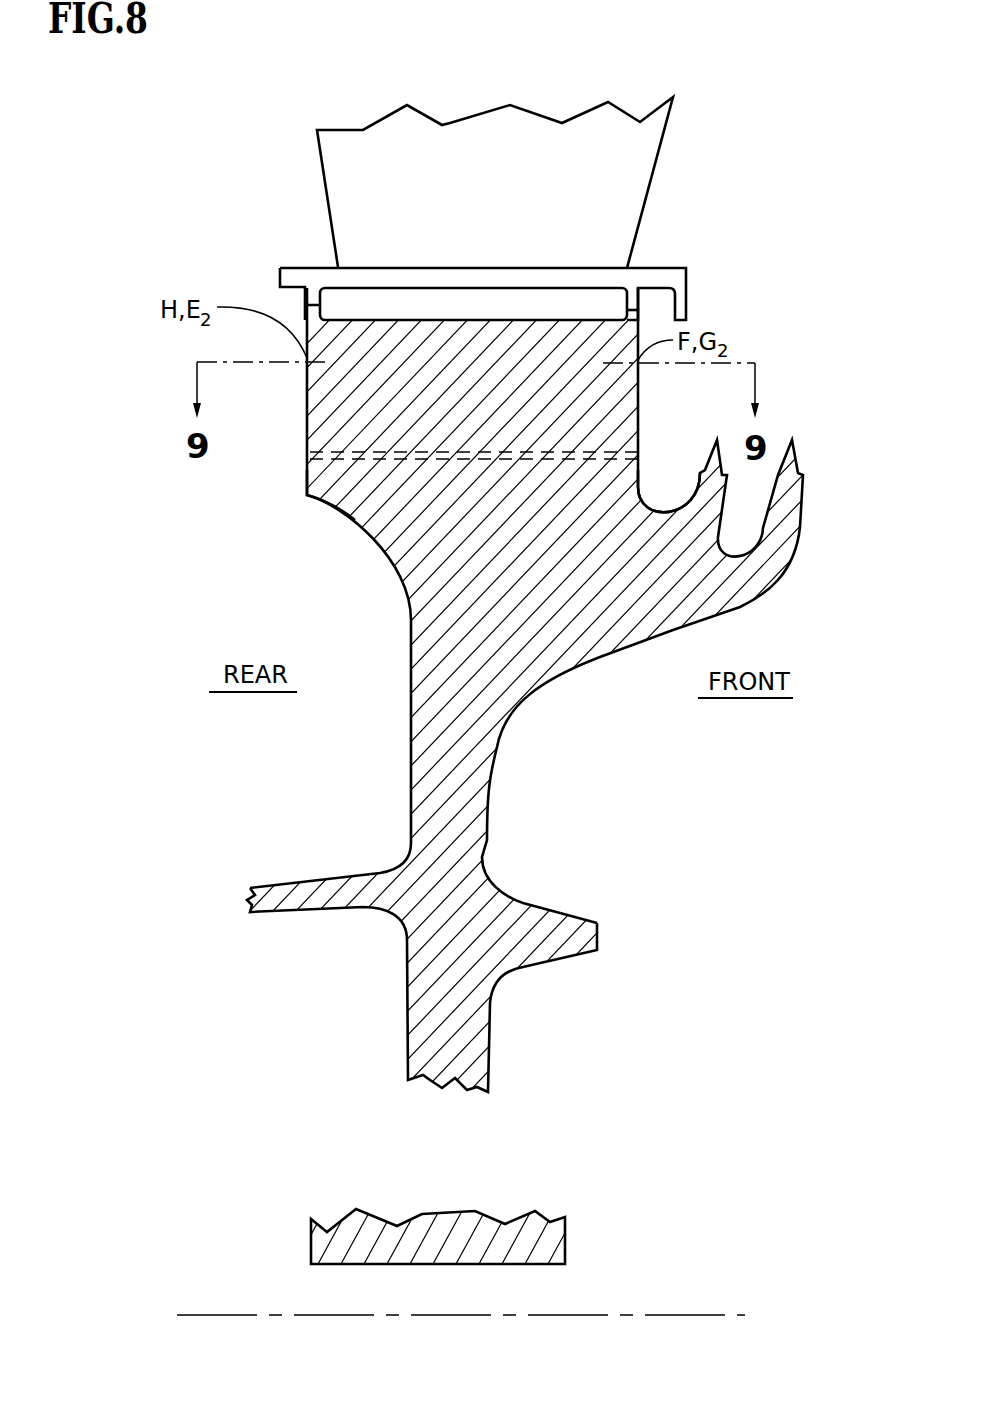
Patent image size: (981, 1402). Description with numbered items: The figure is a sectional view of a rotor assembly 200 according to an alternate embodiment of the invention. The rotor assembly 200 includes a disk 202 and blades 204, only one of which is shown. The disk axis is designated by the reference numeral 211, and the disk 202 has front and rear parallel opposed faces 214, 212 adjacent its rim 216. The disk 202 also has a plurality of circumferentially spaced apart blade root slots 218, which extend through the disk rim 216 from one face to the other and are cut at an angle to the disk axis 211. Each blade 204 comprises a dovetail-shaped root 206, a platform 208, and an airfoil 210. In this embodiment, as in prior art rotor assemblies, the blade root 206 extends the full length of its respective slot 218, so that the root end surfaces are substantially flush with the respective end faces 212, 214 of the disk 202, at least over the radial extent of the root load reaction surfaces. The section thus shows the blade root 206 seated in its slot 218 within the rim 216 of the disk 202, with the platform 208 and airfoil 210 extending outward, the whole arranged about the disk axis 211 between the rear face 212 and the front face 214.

The rotor assembly 200 is at (490, 598).
The disk 202 is at (415, 992).
The blade 204 is at (660, 192).
The blade root 206 is at (455, 462).
The platform 208 is at (650, 267).
The airfoil 210 is at (522, 158).
The disk axis 211 is at (663, 1315).
The rear face 212 is at (307, 475).
The front face 214 is at (640, 408).
The rim 216 is at (492, 316).
The blade root slot 218 is at (358, 462).